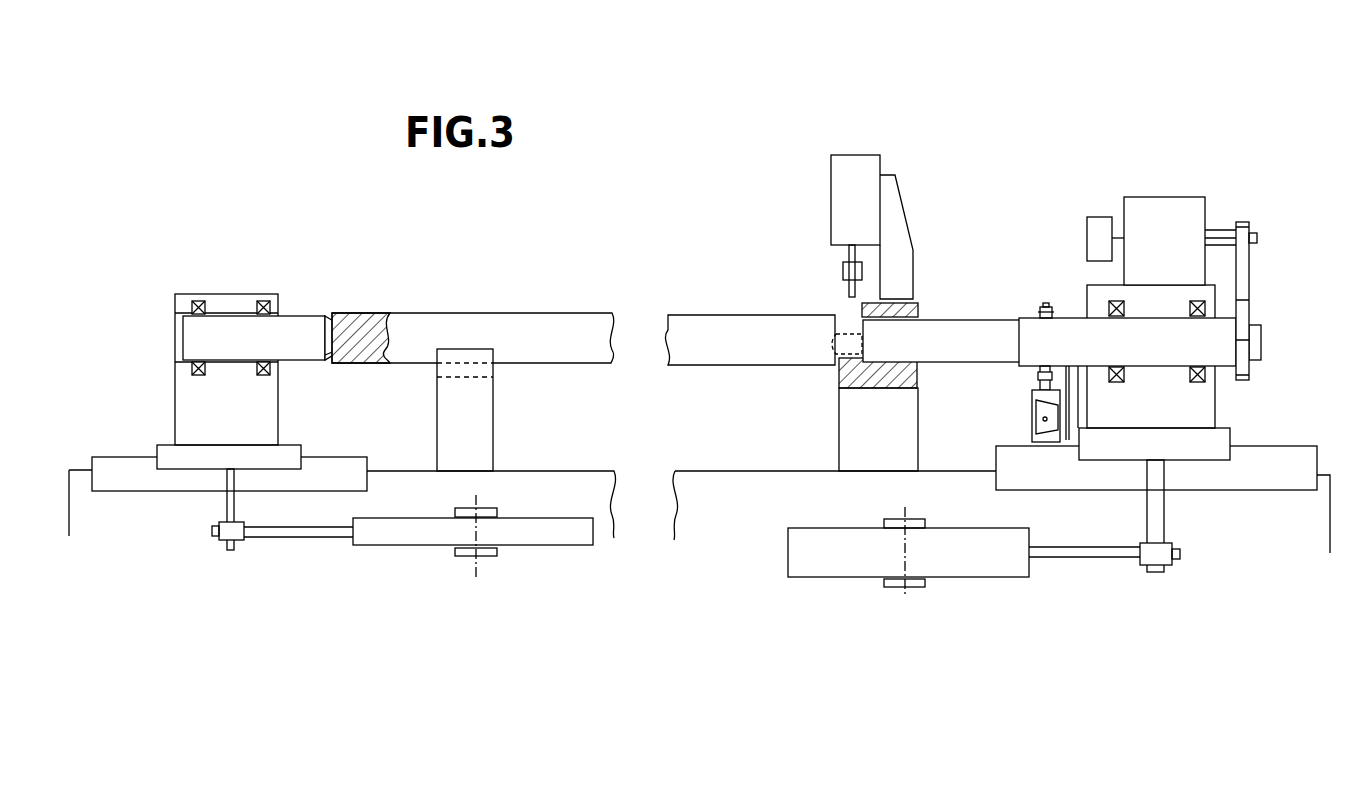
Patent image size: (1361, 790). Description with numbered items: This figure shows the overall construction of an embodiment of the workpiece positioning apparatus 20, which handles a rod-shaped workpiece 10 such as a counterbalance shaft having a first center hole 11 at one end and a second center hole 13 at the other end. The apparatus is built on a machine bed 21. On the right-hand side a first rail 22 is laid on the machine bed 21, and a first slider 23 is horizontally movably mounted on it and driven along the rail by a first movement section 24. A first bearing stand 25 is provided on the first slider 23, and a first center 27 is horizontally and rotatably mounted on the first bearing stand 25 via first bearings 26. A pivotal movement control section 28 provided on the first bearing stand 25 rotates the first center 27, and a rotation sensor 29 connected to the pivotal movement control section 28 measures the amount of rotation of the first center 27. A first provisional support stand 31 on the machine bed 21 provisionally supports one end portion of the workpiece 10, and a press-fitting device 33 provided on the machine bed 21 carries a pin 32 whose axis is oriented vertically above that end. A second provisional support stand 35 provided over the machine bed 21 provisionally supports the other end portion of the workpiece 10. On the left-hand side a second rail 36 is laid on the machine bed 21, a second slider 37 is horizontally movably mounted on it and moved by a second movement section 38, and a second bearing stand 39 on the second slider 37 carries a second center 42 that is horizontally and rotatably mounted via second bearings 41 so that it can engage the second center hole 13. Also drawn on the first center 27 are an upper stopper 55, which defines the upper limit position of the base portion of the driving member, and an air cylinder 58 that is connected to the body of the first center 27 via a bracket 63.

The workpiece 10 is at (571, 313).
The first center hole 11 is at (850, 362).
The second center hole 13 is at (340, 340).
The workpiece positioning apparatus 20 is at (1172, 98).
The machine bed 21 is at (580, 471).
The first rail 22 is at (1308, 446).
The first slider 23 is at (1215, 438).
The first movement section 24 is at (985, 560).
The first bearing stand 25 is at (1207, 400).
The first bearings 26 is at (1117, 301).
The first center 27 is at (968, 319).
The pivotal movement control section 28 is at (1163, 222).
The rotation sensor 29 is at (1100, 218).
The first provisional support stand 31 is at (855, 426).
The pin 32 is at (843, 282).
The press-fitting device 33 is at (857, 162).
The second provisional support stand 35 is at (450, 423).
The second rail 36 is at (125, 457).
The second slider 37 is at (160, 458).
The second movement section 38 is at (420, 533).
The second bearing stand 39 is at (185, 395).
The second bearings 41 is at (263, 297).
The second center 42 is at (302, 322).
The upper stopper 55 is at (1045, 306).
The air cylinder 58 is at (1038, 395).
The bracket 63 is at (1040, 420).